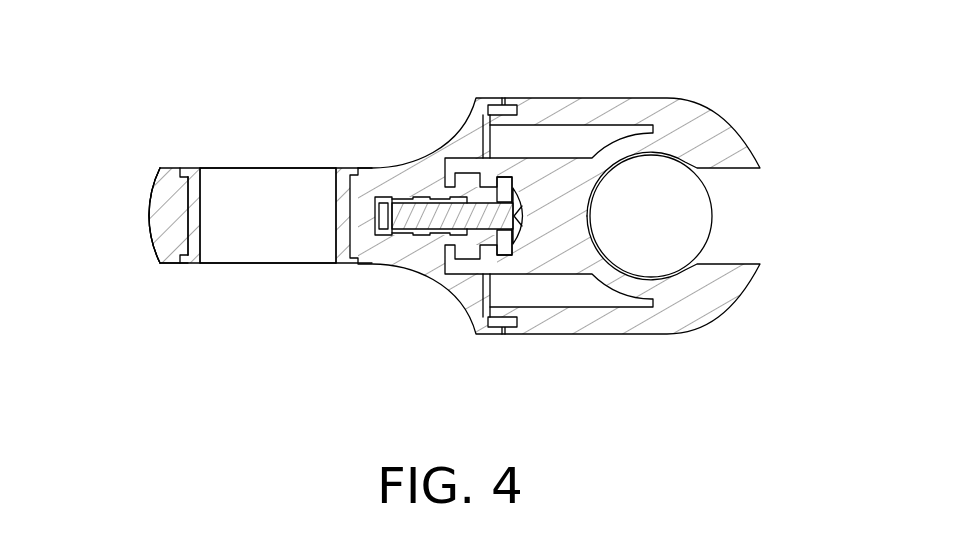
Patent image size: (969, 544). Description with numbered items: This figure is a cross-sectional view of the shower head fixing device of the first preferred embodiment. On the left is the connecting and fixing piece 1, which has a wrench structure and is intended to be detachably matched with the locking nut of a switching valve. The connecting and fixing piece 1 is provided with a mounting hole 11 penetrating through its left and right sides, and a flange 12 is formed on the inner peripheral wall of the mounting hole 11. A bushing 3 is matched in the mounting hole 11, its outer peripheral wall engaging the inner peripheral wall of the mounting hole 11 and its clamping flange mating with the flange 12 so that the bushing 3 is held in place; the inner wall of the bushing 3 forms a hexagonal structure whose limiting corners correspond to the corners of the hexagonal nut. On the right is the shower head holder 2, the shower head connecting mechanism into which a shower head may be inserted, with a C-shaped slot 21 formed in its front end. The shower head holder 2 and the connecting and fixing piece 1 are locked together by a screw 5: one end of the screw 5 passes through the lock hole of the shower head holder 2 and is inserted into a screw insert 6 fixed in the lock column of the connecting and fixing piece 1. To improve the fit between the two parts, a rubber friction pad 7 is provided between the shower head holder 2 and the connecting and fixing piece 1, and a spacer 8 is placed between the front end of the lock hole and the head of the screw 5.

The connecting and fixing piece 1 is at (160, 195).
The mounting hole 11 is at (270, 190).
The flange 12 is at (177, 235).
The shower head holder 2 is at (738, 134).
The C-shaped slot 21 is at (184, 168).
The bushing 3 is at (193, 245).
The screw 5 is at (408, 222).
The screw insert 6 is at (384, 200).
The rubber friction pad 7 is at (502, 101).
The spacer 8 is at (507, 183).